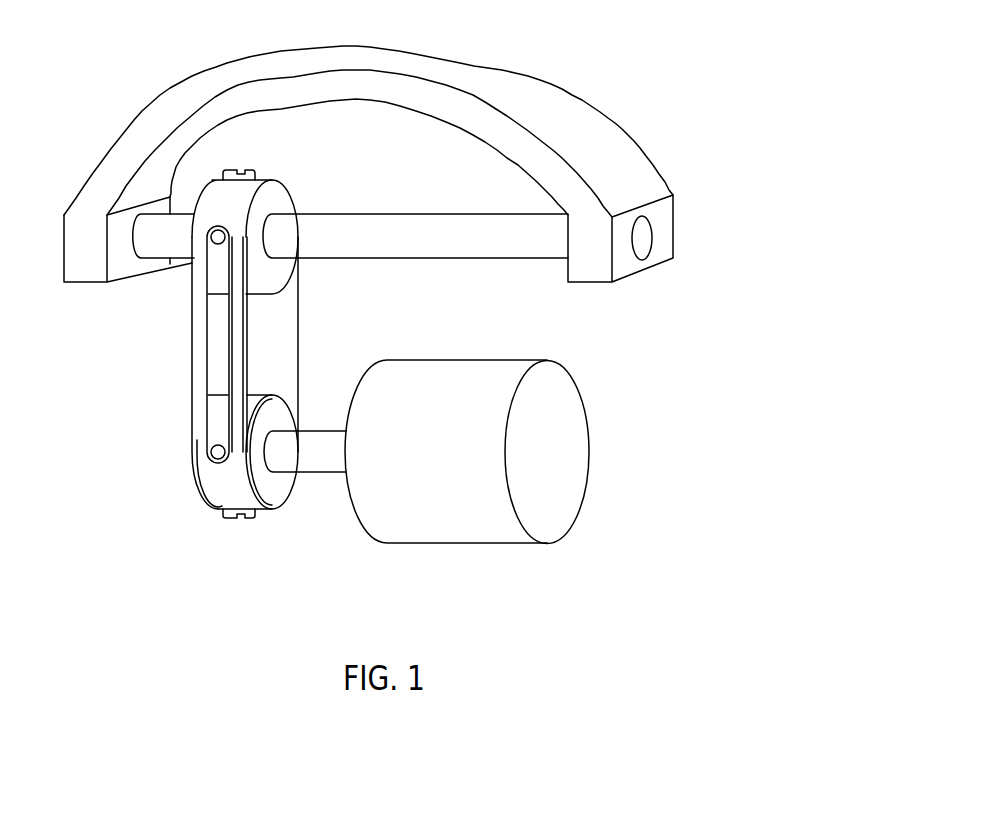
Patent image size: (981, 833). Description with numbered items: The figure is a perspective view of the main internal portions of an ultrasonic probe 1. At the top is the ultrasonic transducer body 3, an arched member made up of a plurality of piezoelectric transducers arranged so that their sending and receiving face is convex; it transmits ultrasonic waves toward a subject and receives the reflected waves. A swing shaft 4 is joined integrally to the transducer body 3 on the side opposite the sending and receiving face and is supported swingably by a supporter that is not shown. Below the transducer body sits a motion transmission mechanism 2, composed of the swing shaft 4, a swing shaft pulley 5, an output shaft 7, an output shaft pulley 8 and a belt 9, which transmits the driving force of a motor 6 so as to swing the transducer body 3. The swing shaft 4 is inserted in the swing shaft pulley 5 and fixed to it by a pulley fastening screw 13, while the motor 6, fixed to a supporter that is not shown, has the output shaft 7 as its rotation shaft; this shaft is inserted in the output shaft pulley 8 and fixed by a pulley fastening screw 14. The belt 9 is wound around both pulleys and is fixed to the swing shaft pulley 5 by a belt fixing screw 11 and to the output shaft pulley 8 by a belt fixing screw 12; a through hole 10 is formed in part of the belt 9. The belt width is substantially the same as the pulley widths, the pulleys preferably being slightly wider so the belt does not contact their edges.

The ultrasonic probe 1 is at (580, 40).
The motion transmission mechanism 2 is at (283, 344).
The ultrasonic transducer body 3 is at (609, 129).
The swing shaft 4 is at (475, 243).
The swing shaft pulley 5 is at (295, 271).
The motor 6 is at (566, 440).
The output shaft 7 is at (319, 456).
The output shaft pulley 8 is at (278, 408).
The belt 9 is at (236, 328).
The through hole 10 is at (216, 357).
The belt fixing screw 11 is at (254, 170).
The belt fixing screw 12 is at (231, 518).
The pulley fastening screw 13 is at (217, 243).
The pulley fastening screw 14 is at (216, 455).